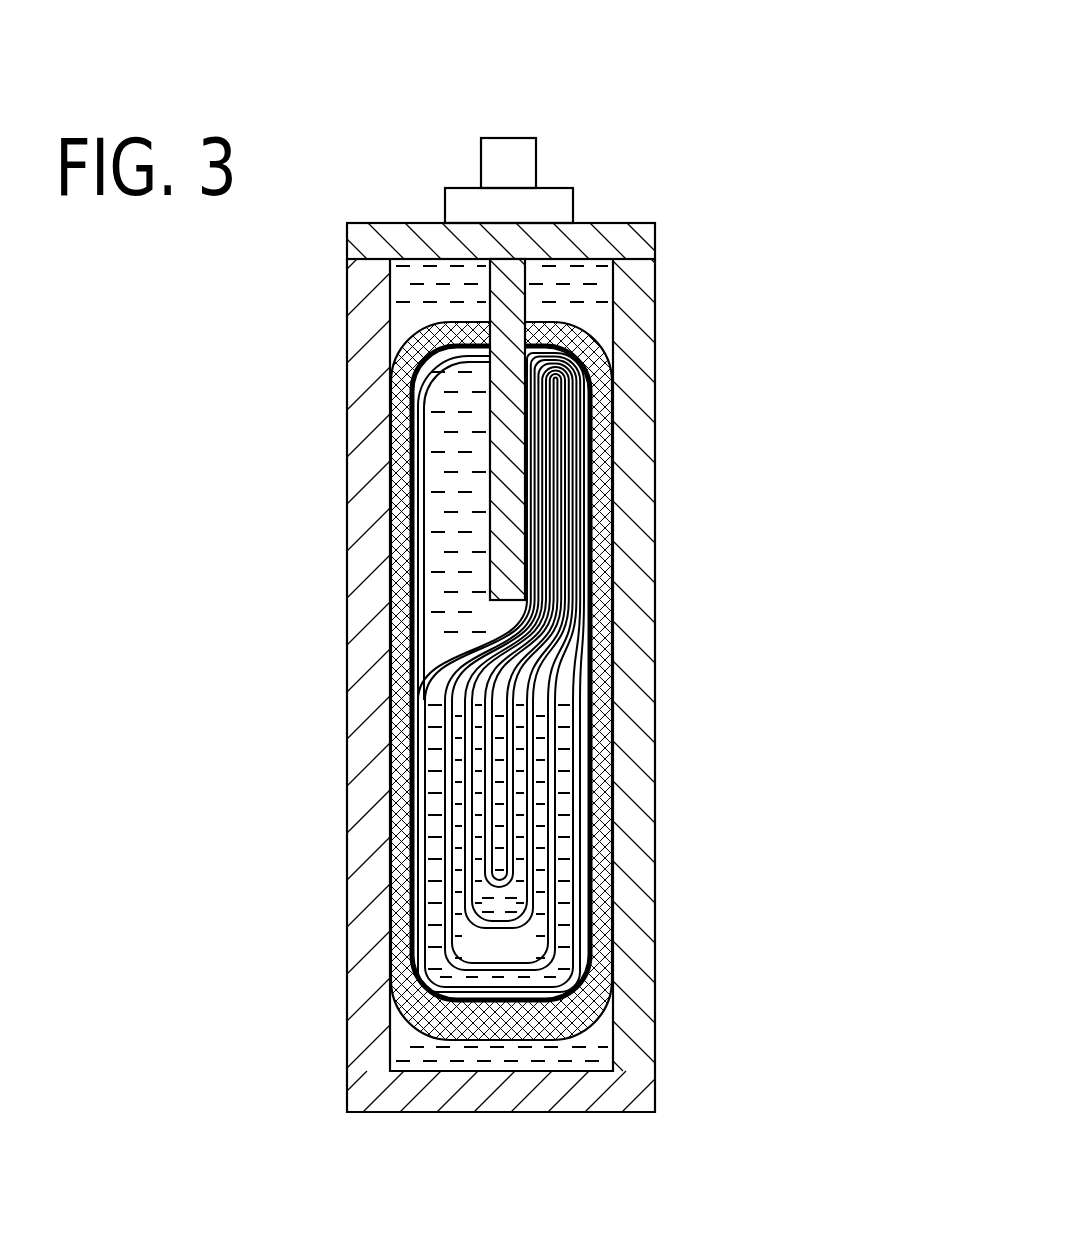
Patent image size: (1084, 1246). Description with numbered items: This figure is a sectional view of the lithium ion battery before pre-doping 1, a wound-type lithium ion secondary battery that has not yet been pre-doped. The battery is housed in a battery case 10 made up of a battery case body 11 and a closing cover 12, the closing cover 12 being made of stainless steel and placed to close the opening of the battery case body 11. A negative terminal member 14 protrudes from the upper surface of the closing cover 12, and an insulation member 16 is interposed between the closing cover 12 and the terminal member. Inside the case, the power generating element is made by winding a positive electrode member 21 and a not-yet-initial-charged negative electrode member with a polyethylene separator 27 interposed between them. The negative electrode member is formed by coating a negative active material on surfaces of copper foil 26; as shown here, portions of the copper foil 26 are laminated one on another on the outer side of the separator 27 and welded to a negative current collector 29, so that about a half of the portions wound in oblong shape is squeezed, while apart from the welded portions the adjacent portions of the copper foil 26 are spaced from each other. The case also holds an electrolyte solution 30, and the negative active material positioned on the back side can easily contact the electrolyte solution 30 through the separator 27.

The lithium ion battery before pre-doping 1 is at (368, 122).
The battery case 10 is at (803, 206).
The battery case body 11 is at (637, 310).
The closing cover 12 is at (645, 238).
The negative terminal member 14 is at (513, 142).
The insulation member 16 is at (552, 197).
The positive electrode member 21 is at (517, 1017).
The copper foil 26 is at (568, 547).
The separator 27 is at (600, 758).
The negative current collector 29 is at (507, 283).
The electrolyte solution 30 is at (583, 1055).